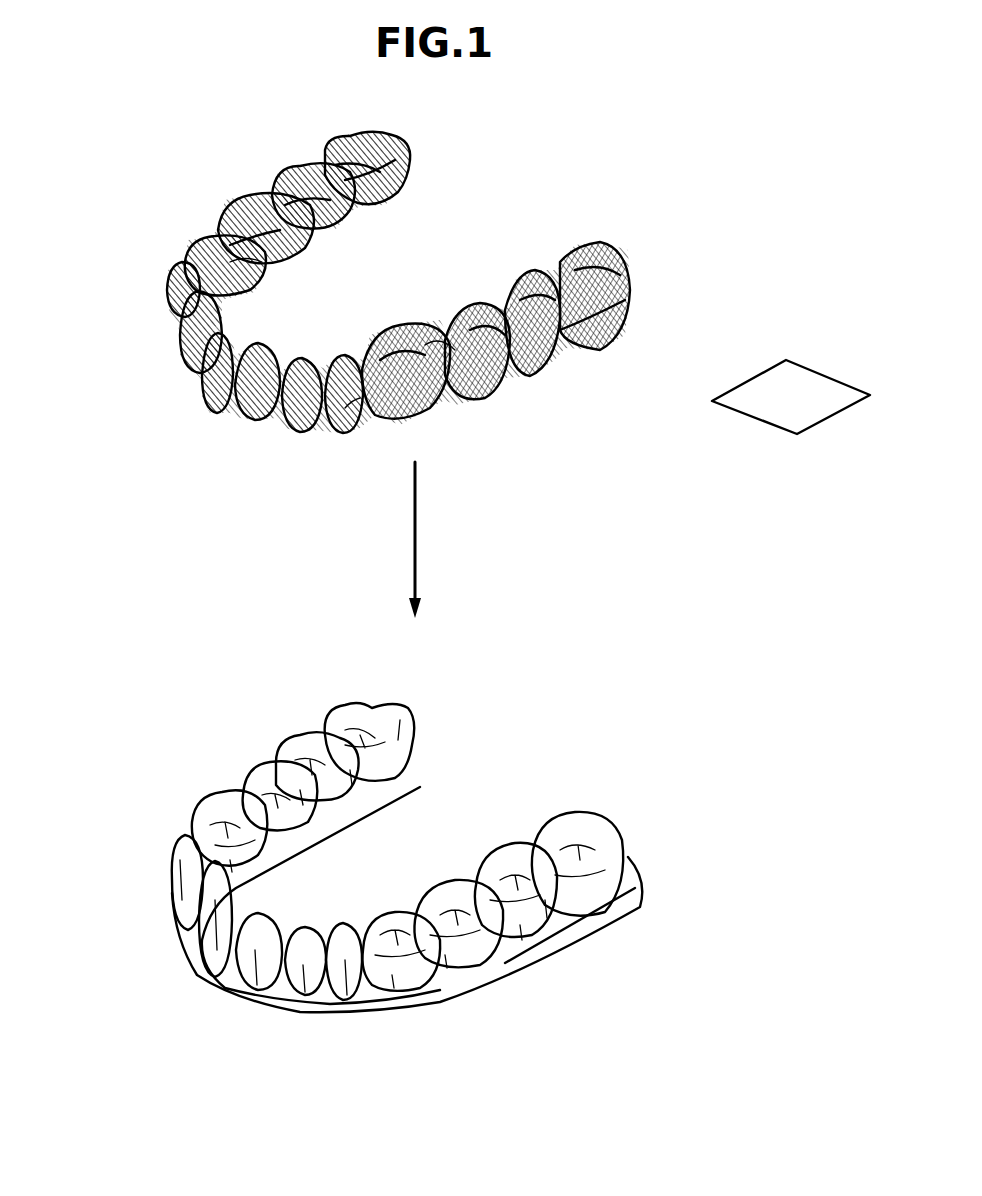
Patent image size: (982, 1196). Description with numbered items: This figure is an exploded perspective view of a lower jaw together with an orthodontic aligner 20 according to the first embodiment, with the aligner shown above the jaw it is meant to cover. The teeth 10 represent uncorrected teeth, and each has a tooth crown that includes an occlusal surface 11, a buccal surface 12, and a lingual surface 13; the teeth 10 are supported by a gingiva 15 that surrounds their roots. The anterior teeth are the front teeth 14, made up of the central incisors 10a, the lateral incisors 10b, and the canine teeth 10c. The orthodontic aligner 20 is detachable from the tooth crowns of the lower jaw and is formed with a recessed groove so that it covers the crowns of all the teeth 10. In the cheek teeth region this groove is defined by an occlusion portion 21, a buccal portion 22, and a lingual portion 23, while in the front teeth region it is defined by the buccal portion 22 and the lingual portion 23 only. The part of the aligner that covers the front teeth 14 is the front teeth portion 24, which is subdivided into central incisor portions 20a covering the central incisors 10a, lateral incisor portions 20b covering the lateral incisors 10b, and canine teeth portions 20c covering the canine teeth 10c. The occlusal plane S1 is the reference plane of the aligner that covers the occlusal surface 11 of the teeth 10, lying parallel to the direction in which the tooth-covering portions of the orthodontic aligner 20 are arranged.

The teeth 10 is at (349, 922).
The central incisors 10a is at (228, 945).
The lateral incisors 10b is at (198, 936).
The canine teeth 10c is at (170, 868).
The occlusal surface 11 is at (437, 920).
The buccal surface 12 is at (412, 977).
The lingual surface 13 is at (248, 848).
The front teeth 14 is at (246, 996).
The gingiva 15 is at (508, 962).
The orthodontic aligner 20 is at (372, 360).
The central incisor portions 20a is at (210, 388).
The lateral incisor portions 20b is at (178, 357).
The canine teeth portions 20c is at (165, 300).
The occlusion portion 21 is at (437, 348).
The buccal portion 22 is at (338, 414).
The lingual portion 23 is at (248, 276).
The front teeth portion 24 is at (229, 425).
The occlusal plane S1 is at (797, 397).